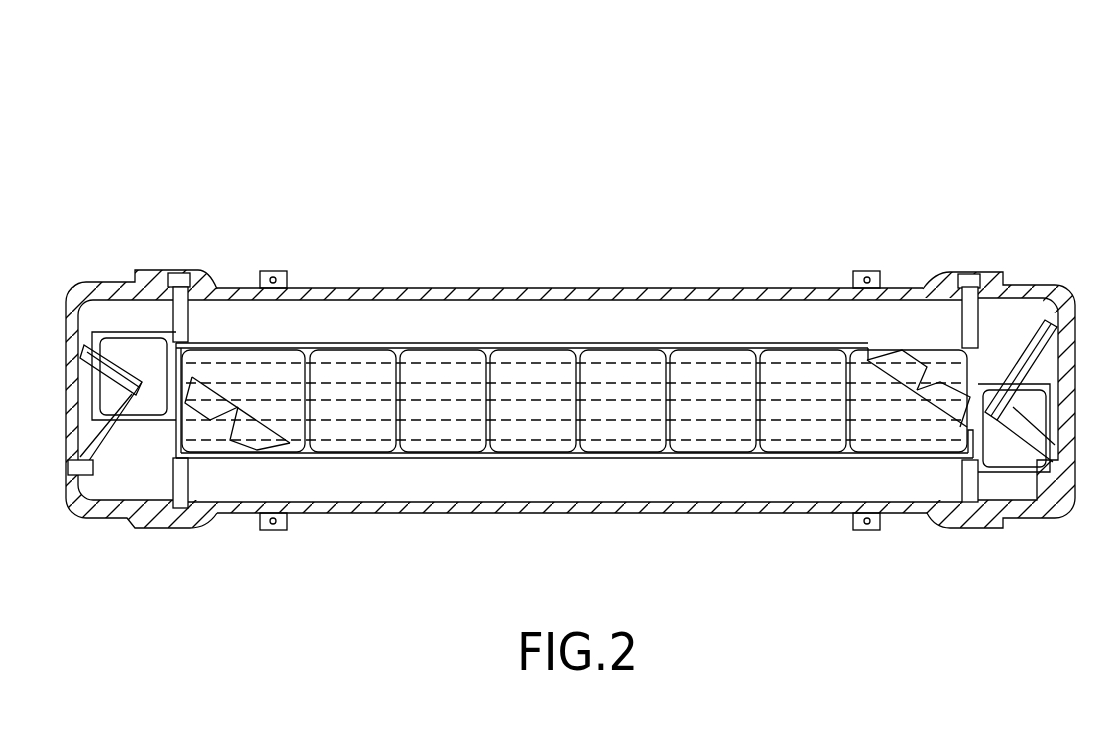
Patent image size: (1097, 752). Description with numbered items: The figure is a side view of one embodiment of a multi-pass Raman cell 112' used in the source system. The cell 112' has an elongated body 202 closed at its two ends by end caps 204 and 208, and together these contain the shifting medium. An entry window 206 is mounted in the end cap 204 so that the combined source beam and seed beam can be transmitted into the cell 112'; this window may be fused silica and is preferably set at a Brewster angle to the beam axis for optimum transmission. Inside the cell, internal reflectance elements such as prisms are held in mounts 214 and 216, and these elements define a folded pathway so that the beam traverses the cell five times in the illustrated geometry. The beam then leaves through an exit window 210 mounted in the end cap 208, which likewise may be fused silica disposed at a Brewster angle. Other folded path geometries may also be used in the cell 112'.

The multi-pass Raman cell 112' is at (570, 312).
The body 202 is at (590, 288).
The end cap 204 is at (132, 520).
The entry window 206 is at (128, 353).
The end cap 208 is at (1037, 513).
The exit window 210 is at (1002, 453).
The mount 214 is at (910, 288).
The mount 216 is at (239, 420).